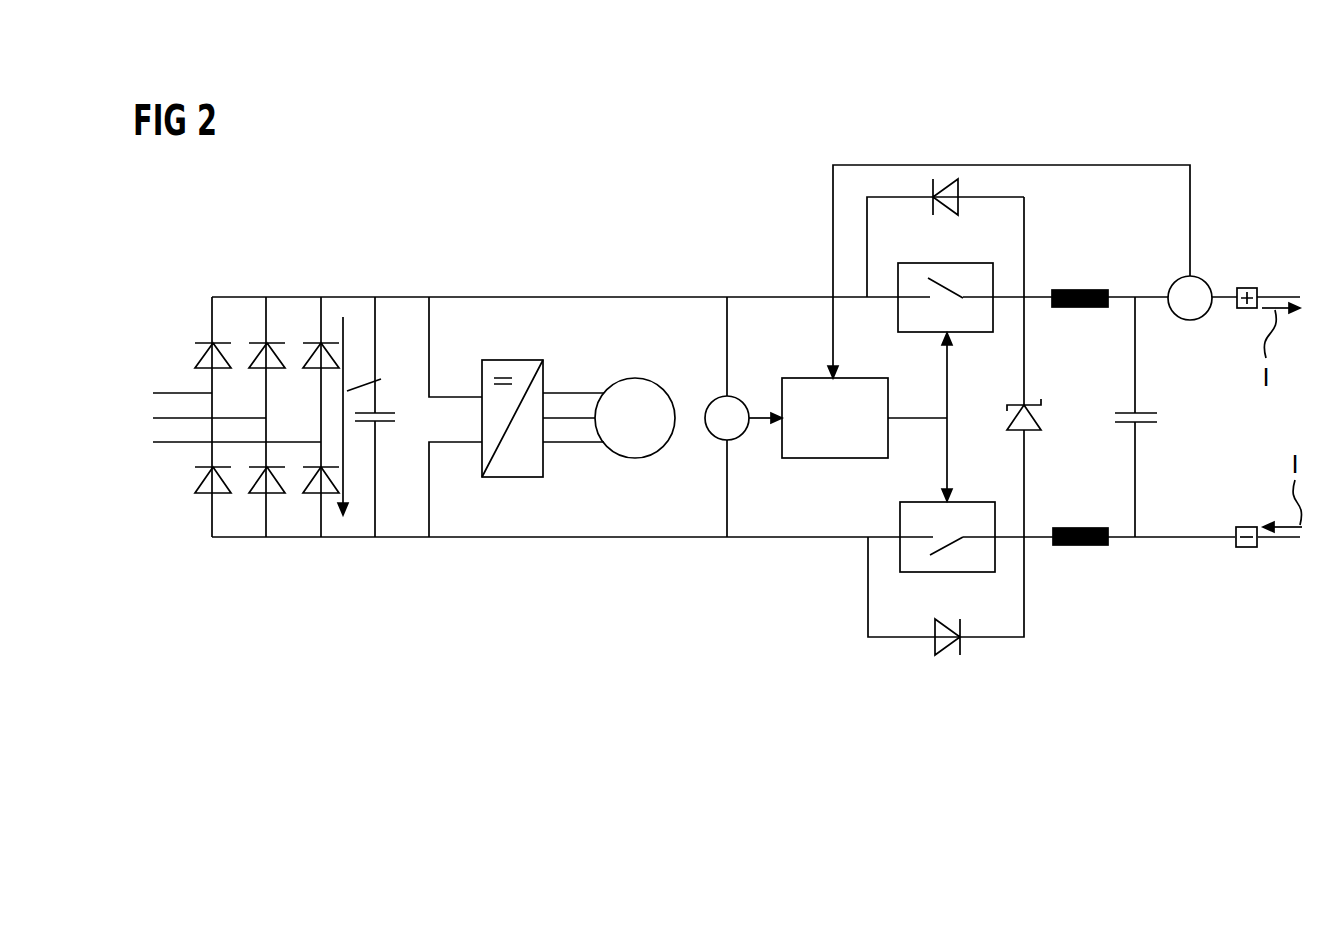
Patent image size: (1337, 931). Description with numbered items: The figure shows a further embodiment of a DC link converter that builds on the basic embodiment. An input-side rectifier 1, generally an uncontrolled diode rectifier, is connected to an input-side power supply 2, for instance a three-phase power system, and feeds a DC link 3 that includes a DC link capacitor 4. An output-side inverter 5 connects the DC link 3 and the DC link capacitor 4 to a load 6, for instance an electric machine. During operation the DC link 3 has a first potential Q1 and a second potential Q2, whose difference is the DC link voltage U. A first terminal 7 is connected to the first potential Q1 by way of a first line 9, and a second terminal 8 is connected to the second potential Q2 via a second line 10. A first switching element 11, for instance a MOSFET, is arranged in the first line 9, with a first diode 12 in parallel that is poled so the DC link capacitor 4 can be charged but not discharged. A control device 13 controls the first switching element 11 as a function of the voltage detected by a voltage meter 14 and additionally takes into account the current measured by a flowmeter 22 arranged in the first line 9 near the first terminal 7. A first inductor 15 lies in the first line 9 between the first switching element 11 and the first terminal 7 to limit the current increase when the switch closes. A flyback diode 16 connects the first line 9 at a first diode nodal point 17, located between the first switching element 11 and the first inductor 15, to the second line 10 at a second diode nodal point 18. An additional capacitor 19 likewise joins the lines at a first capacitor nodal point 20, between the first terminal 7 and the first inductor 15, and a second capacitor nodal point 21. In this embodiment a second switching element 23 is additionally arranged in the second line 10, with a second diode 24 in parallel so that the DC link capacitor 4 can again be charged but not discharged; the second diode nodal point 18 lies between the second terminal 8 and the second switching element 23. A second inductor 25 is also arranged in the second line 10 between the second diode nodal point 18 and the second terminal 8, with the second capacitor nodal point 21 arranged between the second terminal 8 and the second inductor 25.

The input-side rectifier 1 is at (325, 265).
The input-side power supply 2 is at (178, 378).
The DC link 3 is at (430, 265).
The DC link capacitor 4 is at (385, 424).
The output-side inverter 5 is at (510, 477).
The load 6 is at (632, 458).
The first terminal 7 is at (1243, 286).
The second terminal 8 is at (1245, 548).
The first line 9 is at (845, 297).
The second line 10 is at (790, 540).
The first switching element 11 is at (980, 262).
The first diode 12 is at (940, 192).
The control device 13 is at (828, 458).
The voltage meter 14 is at (722, 400).
The first inductor 15 is at (1078, 290).
The flyback diode 16 is at (1040, 412).
The first diode nodal point 17 is at (1028, 296).
The second diode nodal point 18 is at (1028, 540).
The additional capacitor 19 is at (1150, 425).
The first capacitor nodal point 20 is at (1135, 296).
The second capacitor nodal point 21 is at (1135, 545).
The flowmeter 22 is at (1190, 320).
The second switching element 23 is at (983, 572).
The second diode 24 is at (950, 655).
The second inductor 25 is at (1080, 546).
The first potential Q1 is at (648, 296).
The second potential Q2 is at (690, 540).
The DC link voltage U is at (372, 416).